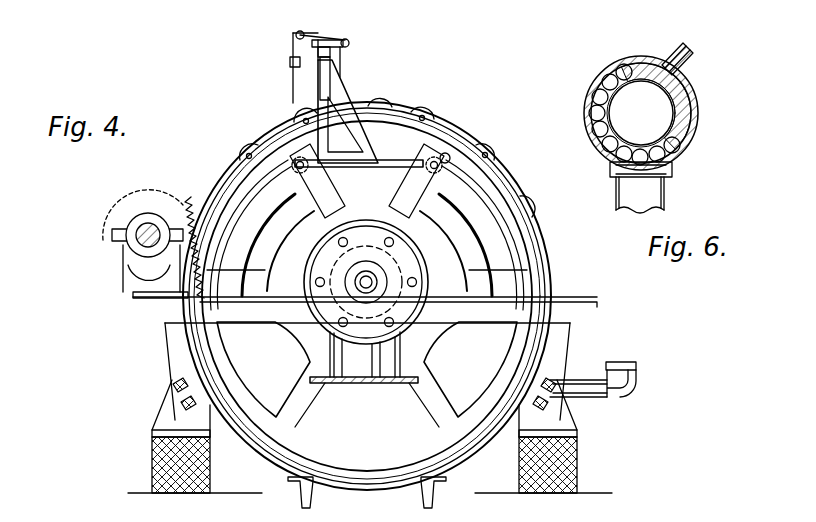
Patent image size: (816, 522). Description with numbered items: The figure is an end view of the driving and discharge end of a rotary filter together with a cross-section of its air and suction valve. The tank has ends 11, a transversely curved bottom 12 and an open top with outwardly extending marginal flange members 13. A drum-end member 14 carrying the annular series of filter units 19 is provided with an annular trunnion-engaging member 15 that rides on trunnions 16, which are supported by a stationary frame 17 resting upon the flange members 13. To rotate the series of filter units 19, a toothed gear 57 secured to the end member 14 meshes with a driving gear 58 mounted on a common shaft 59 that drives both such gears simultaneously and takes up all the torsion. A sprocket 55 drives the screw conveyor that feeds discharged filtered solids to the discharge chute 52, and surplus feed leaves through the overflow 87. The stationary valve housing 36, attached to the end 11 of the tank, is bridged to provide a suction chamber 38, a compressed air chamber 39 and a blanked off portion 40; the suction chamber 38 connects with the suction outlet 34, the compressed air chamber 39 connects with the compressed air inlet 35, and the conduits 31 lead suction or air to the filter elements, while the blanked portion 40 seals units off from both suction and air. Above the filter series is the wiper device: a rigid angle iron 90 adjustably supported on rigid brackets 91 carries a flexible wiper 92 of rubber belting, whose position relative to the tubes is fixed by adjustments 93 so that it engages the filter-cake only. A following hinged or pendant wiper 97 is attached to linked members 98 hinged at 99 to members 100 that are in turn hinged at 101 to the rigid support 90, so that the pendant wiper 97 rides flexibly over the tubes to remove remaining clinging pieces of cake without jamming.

In FIG. 4, the end 11 is at (540, 356).
In FIG. 4, the bottom 12 is at (340, 84).
In FIG. 4, the marginal flange member 13 is at (588, 303).
In FIG. 4, the drum-end member 14 is at (527, 187).
In FIG. 4, the trunnion-engaging member 15 is at (452, 159).
In FIG. 4, the trunnion 16 is at (432, 152).
In FIG. 4, the stationary frame 17 is at (392, 150).
In FIG. 4, the filter unit 19 is at (418, 100).
In FIG. 6, the conduit 31 is at (592, 116).
In FIG. 6, the suction outlet 34 is at (650, 186).
In FIG. 6, the compressed air inlet 35 is at (693, 49).
In FIG. 6, the valve housing 36 is at (622, 64).
In FIG. 6, the suction chamber 38 is at (673, 168).
In FIG. 6, the compressed air chamber 39 is at (672, 80).
In FIG. 6, the blanked off portion 40 is at (644, 62).
In FIG. 4, the discharge chute 52 is at (340, 384).
In FIG. 4, the sprocket 55 is at (380, 272).
In FIG. 4, the toothed gear 57 is at (200, 195).
In FIG. 4, the driving gear 58 is at (165, 186).
In FIG. 4, the common shaft 59 is at (130, 256).
In FIG. 4, the overflow 87 is at (637, 391).
In FIG. 4, the angle iron 90 is at (341, 40).
In FIG. 4, the rigid bracket 91 is at (342, 88).
In FIG. 4, the flexible wiper 92 is at (331, 80).
In FIG. 4, the adjustment 93 is at (326, 40).
In FIG. 4, the pendant wiper 97 is at (293, 85).
In FIG. 4, the linked member 98 is at (292, 56).
In FIG. 4, the hinge 99 is at (297, 35).
In FIG. 4, the member 100 is at (303, 31).
In FIG. 4, the hinge 101 is at (349, 43).